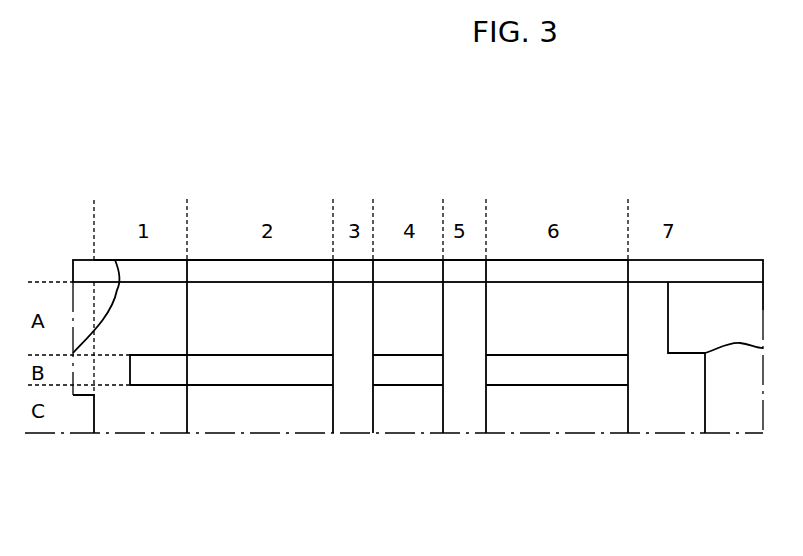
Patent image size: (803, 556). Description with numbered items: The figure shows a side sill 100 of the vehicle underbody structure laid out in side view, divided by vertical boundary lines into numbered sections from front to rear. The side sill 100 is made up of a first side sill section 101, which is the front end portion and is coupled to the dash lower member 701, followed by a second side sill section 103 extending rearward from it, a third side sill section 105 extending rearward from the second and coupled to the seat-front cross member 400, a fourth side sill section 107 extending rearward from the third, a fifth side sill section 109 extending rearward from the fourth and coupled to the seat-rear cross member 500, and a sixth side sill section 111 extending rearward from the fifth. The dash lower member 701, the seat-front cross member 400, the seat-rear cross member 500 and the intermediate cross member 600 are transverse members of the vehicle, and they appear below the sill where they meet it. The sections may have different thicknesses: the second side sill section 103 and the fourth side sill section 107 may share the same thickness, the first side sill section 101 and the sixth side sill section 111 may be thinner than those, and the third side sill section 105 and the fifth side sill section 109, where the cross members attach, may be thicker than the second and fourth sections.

The side sill 100 is at (86, 198).
The first side sill section 101 is at (157, 266).
The second side sill section 103 is at (219, 266).
The third side sill section 105 is at (344, 266).
The fourth side sill section 107 is at (387, 268).
The fifth side sill section 109 is at (475, 268).
The sixth side sill section 111 is at (577, 268).
The dash lower member 701 is at (143, 435).
The seat-front cross member 400 is at (346, 435).
The seat-rear cross member 500 is at (467, 435).
The intermediate cross member 600 is at (669, 435).